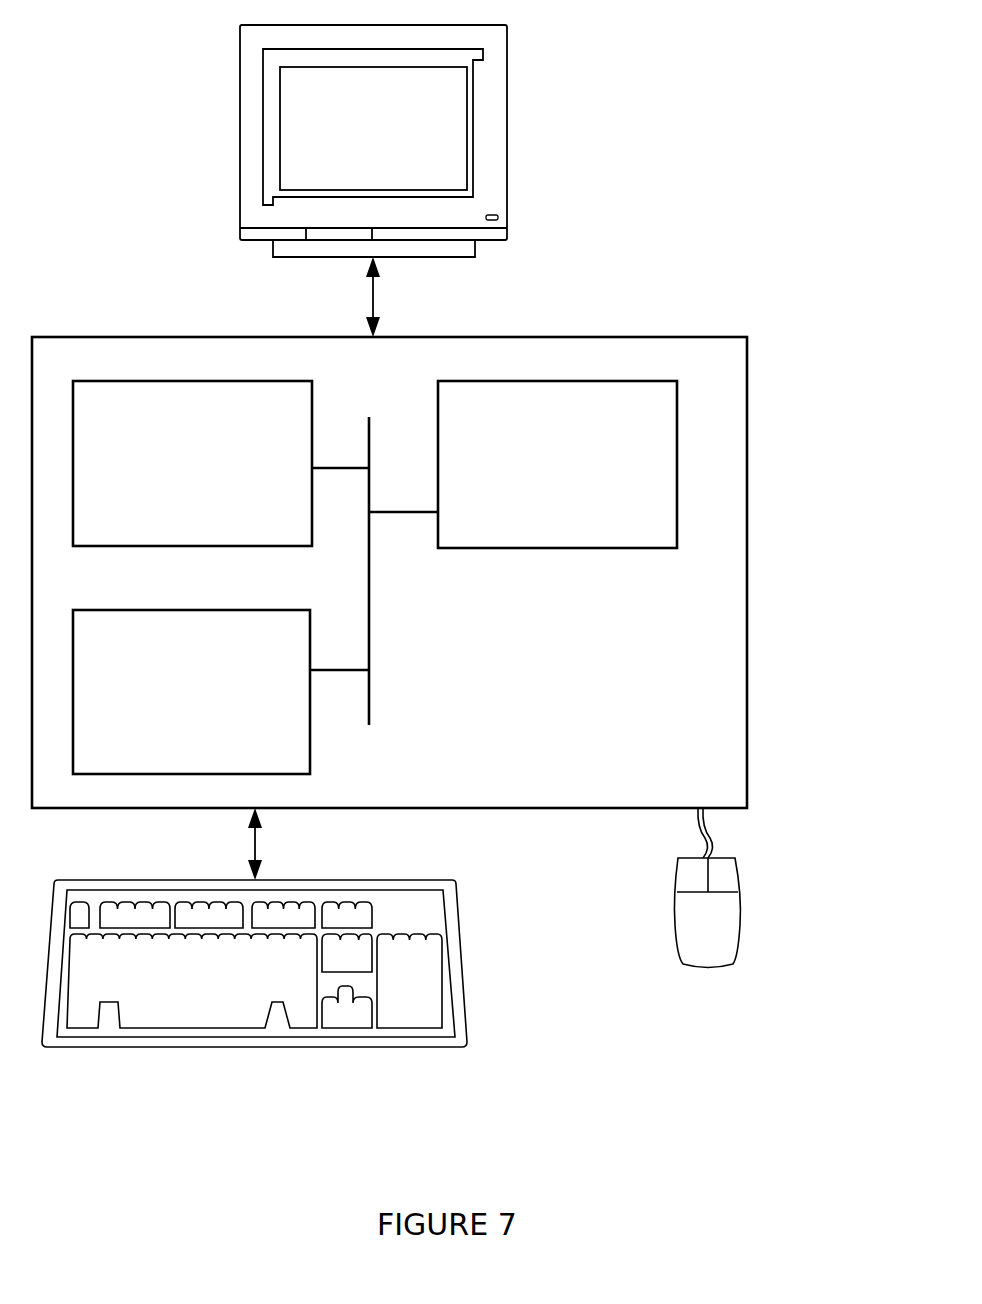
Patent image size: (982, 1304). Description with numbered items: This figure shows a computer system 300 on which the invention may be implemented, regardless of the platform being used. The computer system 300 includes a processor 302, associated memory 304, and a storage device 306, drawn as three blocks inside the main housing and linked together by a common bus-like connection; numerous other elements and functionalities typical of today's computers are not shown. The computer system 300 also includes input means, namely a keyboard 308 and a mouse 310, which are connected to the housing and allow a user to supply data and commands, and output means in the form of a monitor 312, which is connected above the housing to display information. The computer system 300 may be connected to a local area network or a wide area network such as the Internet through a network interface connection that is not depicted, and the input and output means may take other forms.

The computer system 300 is at (768, 185).
The processor 302 is at (554, 476).
The memory 304 is at (171, 474).
The storage device 306 is at (166, 706).
The keyboard 308 is at (161, 1004).
The mouse 310 is at (685, 936).
The monitor 312 is at (351, 146).